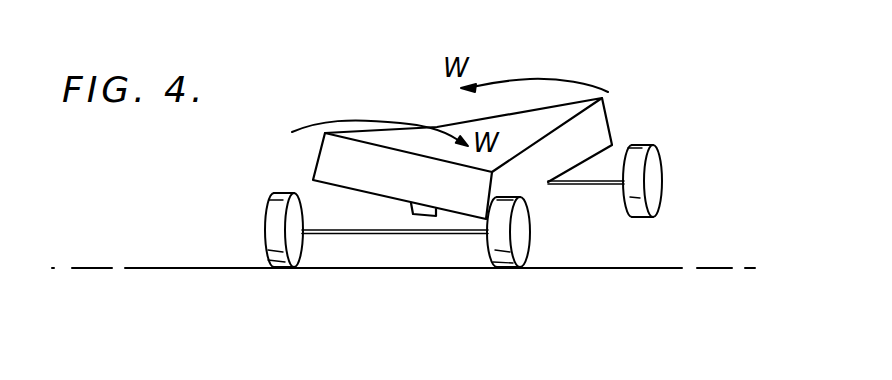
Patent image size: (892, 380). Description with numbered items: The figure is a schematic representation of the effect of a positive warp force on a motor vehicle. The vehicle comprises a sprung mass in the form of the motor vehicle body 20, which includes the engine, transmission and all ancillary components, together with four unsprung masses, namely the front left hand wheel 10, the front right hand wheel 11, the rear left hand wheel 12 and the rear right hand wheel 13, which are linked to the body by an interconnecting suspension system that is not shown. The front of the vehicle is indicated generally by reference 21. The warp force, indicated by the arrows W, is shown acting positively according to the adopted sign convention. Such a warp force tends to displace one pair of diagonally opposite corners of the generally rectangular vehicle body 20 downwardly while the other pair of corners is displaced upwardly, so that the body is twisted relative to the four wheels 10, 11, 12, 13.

The front left hand wheel 10 is at (515, 243).
The front right hand wheel 11 is at (270, 232).
The rear left hand wheel 12 is at (665, 184).
The rear right hand wheel 13 is at (413, 238).
The motor vehicle body 20 is at (583, 139).
The front of the vehicle 21 is at (338, 163).